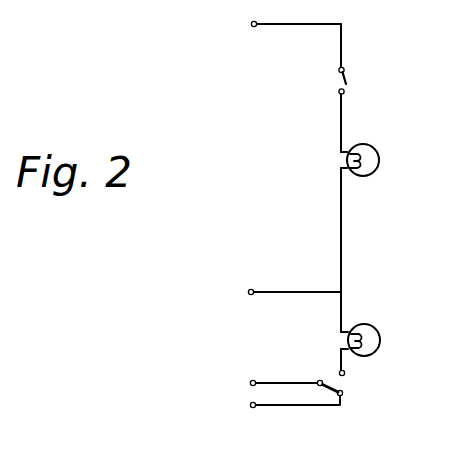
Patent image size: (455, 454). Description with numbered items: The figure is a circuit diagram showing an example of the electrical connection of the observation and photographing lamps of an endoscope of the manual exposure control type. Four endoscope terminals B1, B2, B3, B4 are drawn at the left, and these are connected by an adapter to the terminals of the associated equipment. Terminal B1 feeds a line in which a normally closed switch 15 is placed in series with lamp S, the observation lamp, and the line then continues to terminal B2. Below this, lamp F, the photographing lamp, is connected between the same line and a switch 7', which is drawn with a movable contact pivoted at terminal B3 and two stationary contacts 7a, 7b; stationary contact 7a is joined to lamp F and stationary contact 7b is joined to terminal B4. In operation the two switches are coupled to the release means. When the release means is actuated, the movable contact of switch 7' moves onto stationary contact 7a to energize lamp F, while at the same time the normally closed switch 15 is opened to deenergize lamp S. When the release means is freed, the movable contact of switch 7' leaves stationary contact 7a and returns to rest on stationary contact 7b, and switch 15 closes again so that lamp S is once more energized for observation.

The terminal B1 is at (280, 25).
The terminal B2 is at (280, 292).
The terminal B3 is at (268, 384).
The terminal B4 is at (279, 406).
The normally closed switch 15 is at (346, 80).
The lamp S is at (380, 160).
The lamp F is at (381, 340).
The switch 7' is at (321, 368).
The stationary contact 7a is at (345, 375).
The stationary contact 7b is at (343, 396).